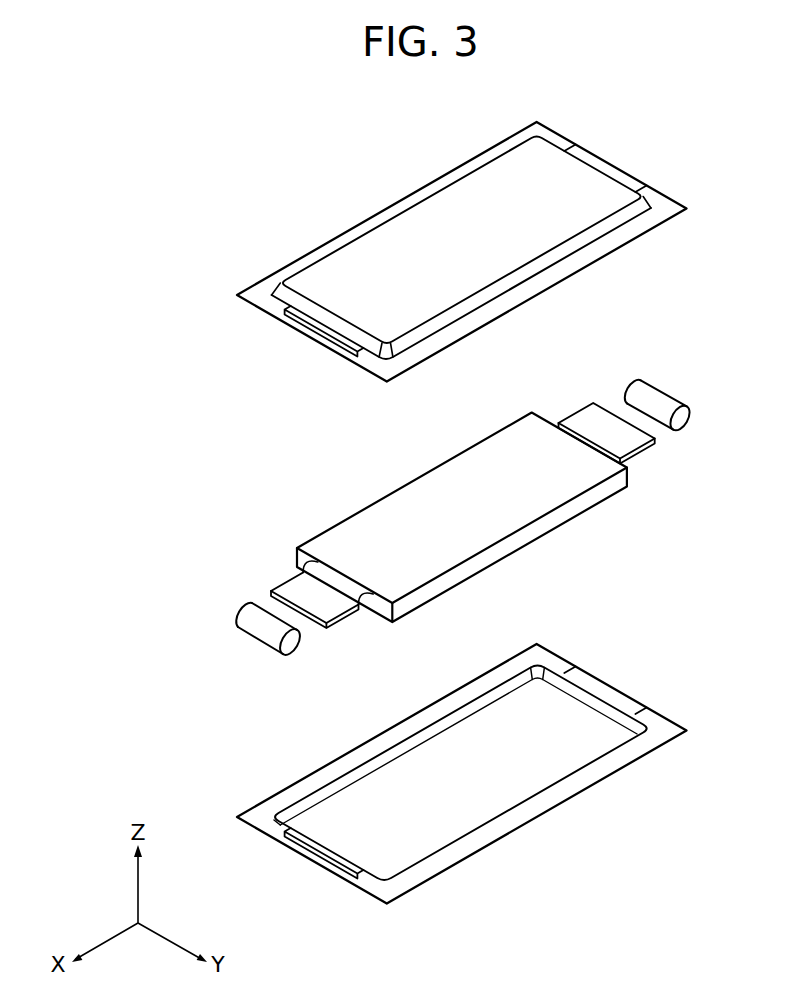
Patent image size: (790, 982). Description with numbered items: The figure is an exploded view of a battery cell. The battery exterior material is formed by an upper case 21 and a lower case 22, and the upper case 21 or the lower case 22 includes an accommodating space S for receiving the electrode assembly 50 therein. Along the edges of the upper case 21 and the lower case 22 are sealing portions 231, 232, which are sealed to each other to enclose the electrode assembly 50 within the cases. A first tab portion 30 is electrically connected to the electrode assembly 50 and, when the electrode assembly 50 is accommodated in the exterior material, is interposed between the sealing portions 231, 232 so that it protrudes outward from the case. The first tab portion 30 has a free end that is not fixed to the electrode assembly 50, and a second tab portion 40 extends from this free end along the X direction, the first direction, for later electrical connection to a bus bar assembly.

The upper case 21 is at (355, 250).
The sealing portion 231 is at (597, 250).
The electrode assembly 50 is at (386, 513).
The first tab portion 30 is at (266, 580).
The second tab portion 40 is at (226, 605).
The lower case 22 is at (355, 773).
The sealing portion 232 is at (597, 772).
The accommodating space S is at (560, 727).